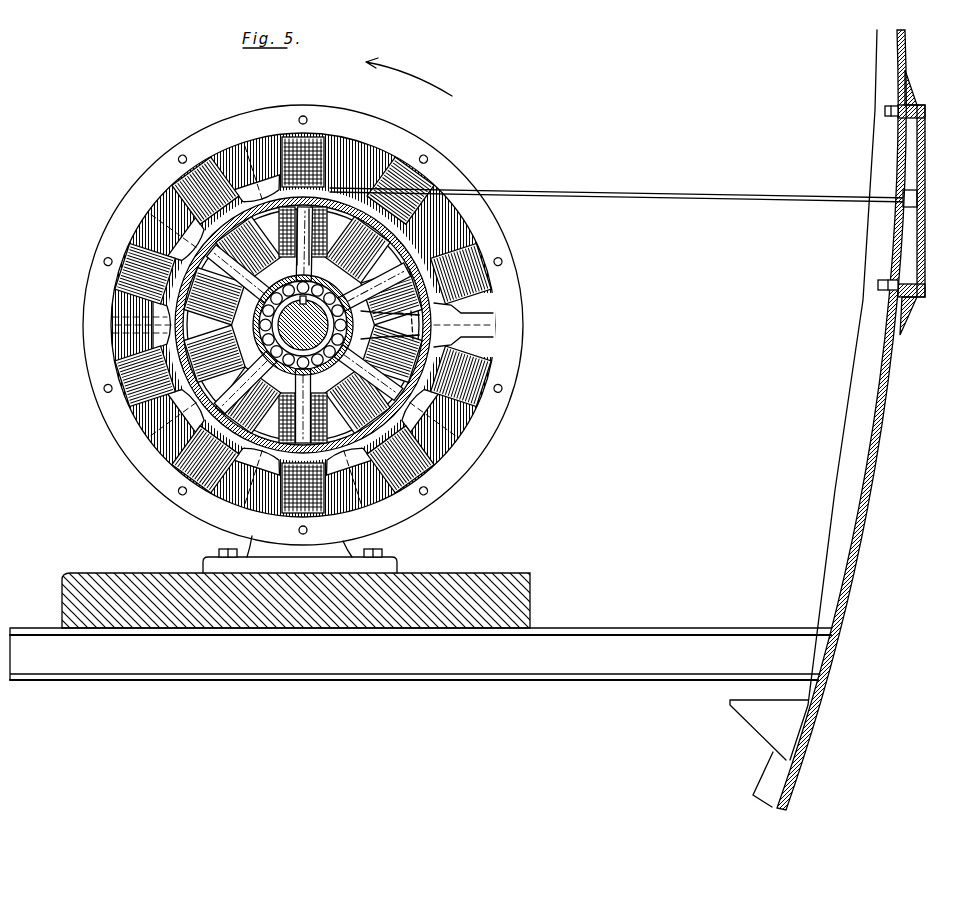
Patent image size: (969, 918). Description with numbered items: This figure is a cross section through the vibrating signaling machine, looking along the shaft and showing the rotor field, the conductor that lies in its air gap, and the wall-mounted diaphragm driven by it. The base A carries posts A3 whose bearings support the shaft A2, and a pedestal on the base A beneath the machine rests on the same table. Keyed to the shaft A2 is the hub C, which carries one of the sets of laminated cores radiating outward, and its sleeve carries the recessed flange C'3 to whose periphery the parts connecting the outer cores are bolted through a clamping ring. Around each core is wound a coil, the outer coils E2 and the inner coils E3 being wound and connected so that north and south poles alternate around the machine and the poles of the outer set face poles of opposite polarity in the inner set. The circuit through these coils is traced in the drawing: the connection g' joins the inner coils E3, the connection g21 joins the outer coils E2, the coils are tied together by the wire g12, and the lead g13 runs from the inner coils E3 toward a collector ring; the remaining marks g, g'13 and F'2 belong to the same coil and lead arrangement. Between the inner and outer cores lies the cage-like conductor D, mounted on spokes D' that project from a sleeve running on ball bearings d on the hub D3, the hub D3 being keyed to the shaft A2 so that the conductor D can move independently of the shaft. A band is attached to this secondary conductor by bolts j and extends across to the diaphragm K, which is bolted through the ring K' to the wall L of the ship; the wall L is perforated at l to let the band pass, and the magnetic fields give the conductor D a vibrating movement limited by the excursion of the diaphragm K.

The base A is at (120, 576).
The shaft A2 is at (299, 327).
The posts A3 is at (243, 541).
The hub C is at (303, 315).
The recessed flange C'3 is at (303, 325).
The conductor D is at (244, 318).
The spokes D' is at (285, 242).
The hub D3 is at (286, 325).
The ball bearings d is at (278, 323).
The outer coils E2 is at (246, 315).
The inner coils E3 is at (213, 468).
The field coil F'2 is at (459, 266).
The pole piece g is at (390, 325).
The wire g12 is at (413, 325).
The lead g13 is at (464, 323).
The pole piece g'13 is at (464, 340).
The connection g21 is at (292, 299).
The connection g' is at (303, 275).
The bolts j is at (103, 312).
The perforation l is at (623, 187).
The wall of a ship L is at (878, 452).
The diaphragm K is at (911, 201).
The ring K' is at (919, 202).